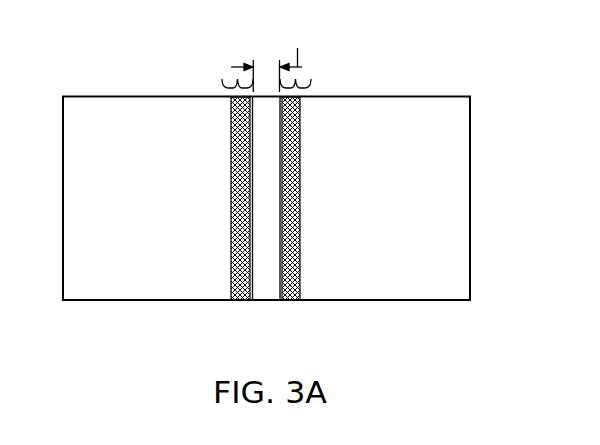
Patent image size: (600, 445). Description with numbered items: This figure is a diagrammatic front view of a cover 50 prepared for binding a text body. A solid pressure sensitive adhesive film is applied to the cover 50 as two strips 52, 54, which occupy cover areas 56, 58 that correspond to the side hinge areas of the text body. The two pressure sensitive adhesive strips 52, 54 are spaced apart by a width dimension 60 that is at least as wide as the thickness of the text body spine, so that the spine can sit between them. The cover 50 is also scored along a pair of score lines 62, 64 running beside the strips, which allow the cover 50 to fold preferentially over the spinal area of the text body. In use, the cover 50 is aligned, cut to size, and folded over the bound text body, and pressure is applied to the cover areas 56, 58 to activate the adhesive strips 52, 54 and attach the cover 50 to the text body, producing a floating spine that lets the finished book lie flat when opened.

The cover 50 is at (471, 198).
The pressure sensitive adhesive strip 52 is at (233, 198).
The pressure sensitive adhesive strip 54 is at (298, 198).
The cover area 56 is at (224, 82).
The cover area 58 is at (307, 83).
The width dimension 60 is at (308, 48).
The score line 62 is at (247, 140).
The score line 64 is at (285, 143).